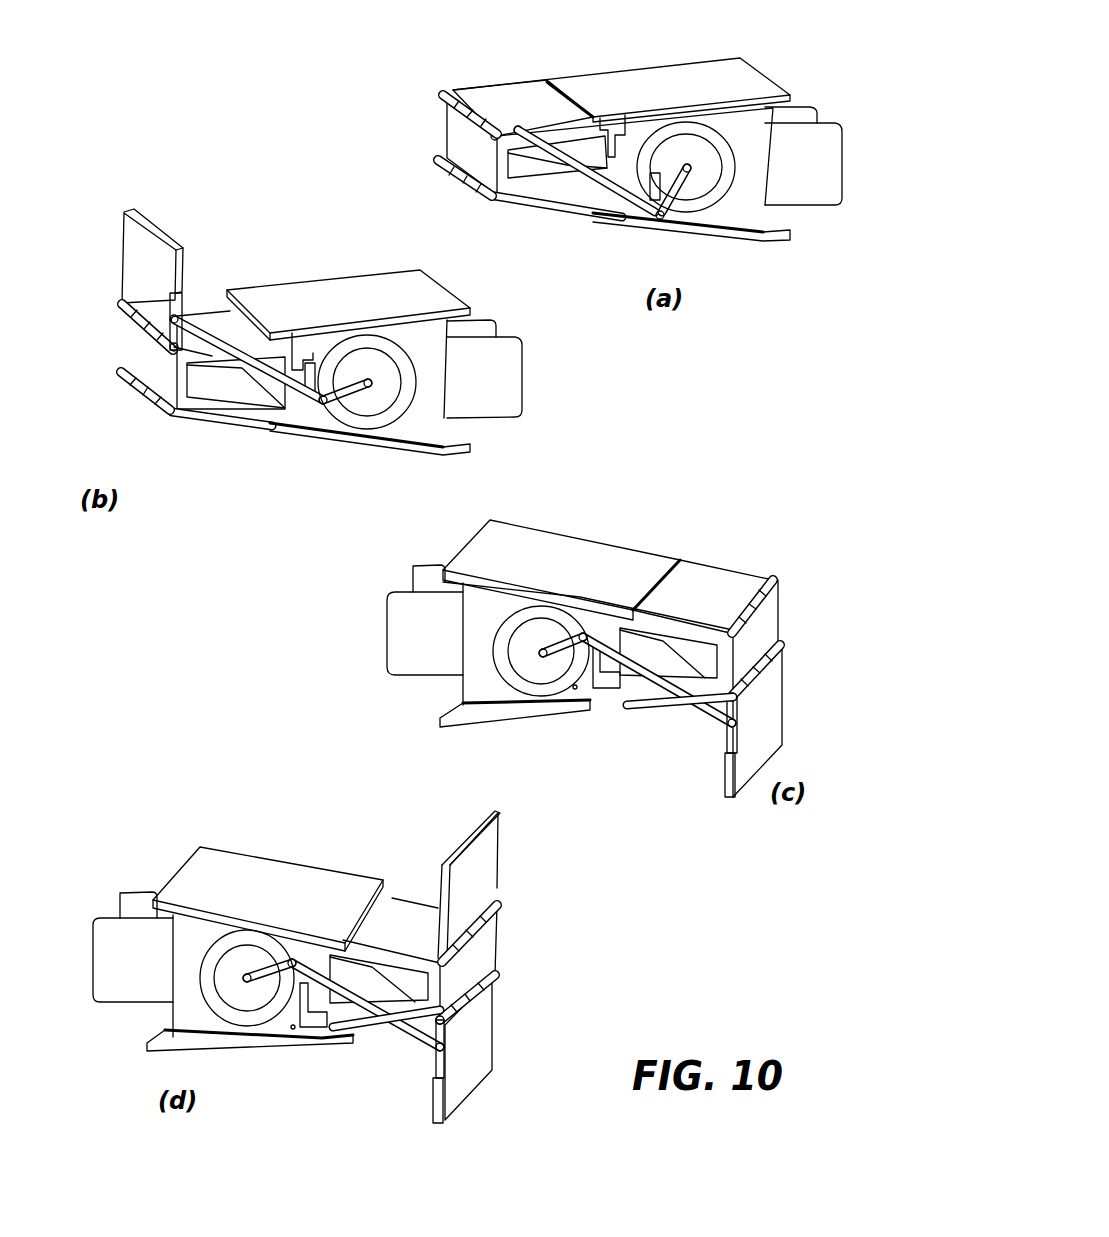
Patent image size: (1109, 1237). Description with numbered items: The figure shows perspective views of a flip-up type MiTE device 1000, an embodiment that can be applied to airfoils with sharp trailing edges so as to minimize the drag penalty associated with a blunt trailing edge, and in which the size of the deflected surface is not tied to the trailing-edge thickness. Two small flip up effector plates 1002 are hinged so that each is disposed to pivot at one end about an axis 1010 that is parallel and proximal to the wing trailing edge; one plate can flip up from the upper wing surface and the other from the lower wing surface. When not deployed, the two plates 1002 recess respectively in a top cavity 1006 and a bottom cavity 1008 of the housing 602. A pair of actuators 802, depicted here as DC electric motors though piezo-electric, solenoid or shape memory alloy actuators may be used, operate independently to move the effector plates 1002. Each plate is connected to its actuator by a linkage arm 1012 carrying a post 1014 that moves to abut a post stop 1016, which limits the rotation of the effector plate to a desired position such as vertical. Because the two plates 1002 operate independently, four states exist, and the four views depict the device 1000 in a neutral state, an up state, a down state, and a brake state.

The flip-up type MiTE device 1000 is at (213, 118).
The flip up effector plates 1002 is at (455, 90).
The top cavity 1006 is at (207, 302).
The bottom cavity 1008 is at (645, 690).
The axis 1010 is at (450, 93).
The linkage arms 1012 is at (623, 213).
The post 1014 is at (670, 217).
The post stop 1016 is at (623, 147).
The housing 602 is at (770, 80).
The actuators 802 is at (640, 205).